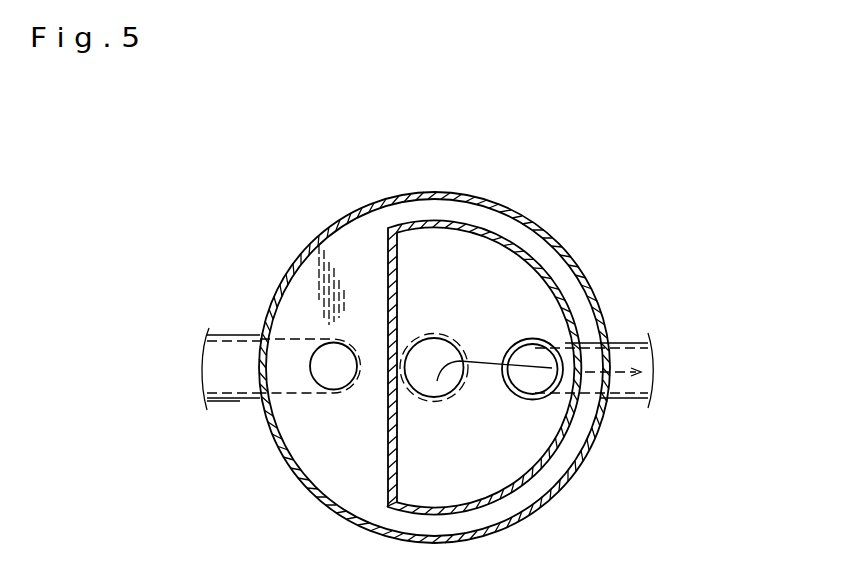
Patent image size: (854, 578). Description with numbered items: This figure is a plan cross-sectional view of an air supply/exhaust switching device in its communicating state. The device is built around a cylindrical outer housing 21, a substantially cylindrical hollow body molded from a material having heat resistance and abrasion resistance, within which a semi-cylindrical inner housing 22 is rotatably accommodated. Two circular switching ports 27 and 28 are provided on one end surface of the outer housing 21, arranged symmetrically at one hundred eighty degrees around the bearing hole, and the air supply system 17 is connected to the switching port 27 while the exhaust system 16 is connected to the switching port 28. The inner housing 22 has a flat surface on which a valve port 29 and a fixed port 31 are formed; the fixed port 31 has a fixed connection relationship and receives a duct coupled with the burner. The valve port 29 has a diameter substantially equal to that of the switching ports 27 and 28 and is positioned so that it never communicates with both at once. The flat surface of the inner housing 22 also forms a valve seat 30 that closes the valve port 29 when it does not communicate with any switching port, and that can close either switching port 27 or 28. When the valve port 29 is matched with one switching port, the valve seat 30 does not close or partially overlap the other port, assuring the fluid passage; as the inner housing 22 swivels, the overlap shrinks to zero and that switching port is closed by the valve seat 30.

The exhaust system 16 is at (627, 350).
The air supply system 17 is at (233, 350).
The outer housing 21 is at (305, 250).
The inner housing 22 is at (418, 223).
The switching port 27 is at (328, 374).
The switching port 28 is at (527, 382).
The valve port 29 is at (541, 353).
The valve seat 30 is at (508, 267).
The fixed port 31 is at (420, 358).